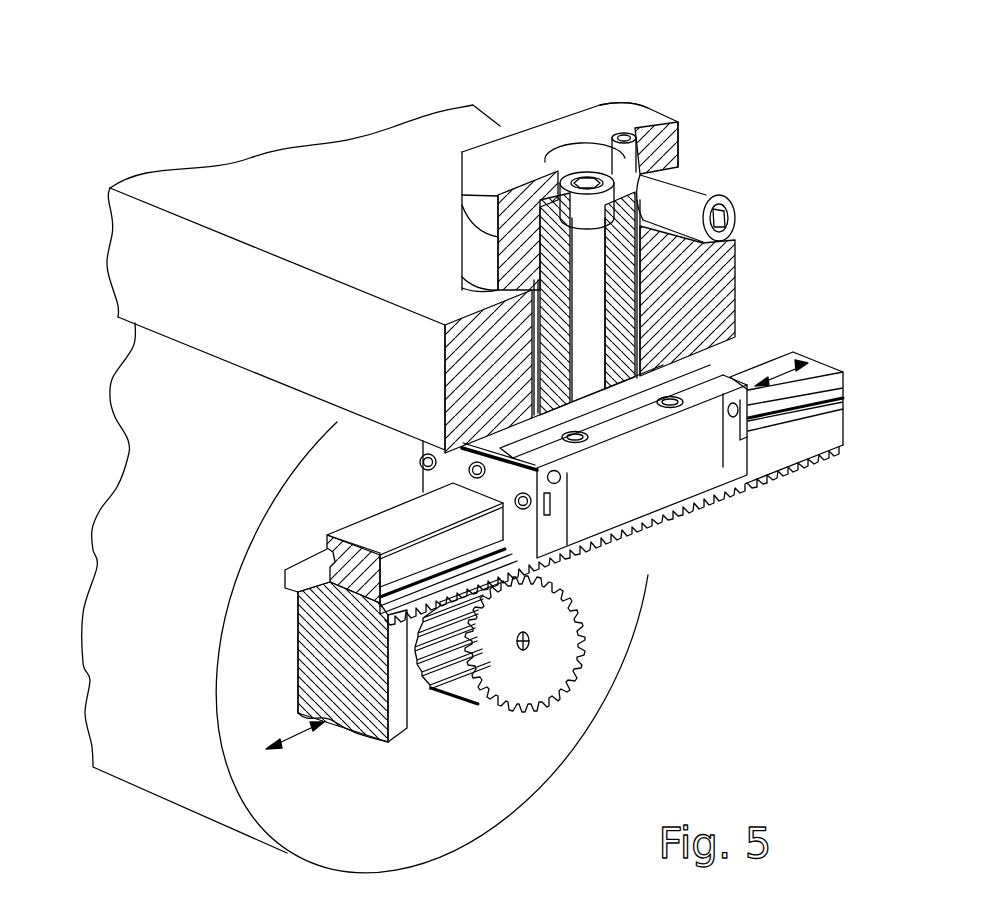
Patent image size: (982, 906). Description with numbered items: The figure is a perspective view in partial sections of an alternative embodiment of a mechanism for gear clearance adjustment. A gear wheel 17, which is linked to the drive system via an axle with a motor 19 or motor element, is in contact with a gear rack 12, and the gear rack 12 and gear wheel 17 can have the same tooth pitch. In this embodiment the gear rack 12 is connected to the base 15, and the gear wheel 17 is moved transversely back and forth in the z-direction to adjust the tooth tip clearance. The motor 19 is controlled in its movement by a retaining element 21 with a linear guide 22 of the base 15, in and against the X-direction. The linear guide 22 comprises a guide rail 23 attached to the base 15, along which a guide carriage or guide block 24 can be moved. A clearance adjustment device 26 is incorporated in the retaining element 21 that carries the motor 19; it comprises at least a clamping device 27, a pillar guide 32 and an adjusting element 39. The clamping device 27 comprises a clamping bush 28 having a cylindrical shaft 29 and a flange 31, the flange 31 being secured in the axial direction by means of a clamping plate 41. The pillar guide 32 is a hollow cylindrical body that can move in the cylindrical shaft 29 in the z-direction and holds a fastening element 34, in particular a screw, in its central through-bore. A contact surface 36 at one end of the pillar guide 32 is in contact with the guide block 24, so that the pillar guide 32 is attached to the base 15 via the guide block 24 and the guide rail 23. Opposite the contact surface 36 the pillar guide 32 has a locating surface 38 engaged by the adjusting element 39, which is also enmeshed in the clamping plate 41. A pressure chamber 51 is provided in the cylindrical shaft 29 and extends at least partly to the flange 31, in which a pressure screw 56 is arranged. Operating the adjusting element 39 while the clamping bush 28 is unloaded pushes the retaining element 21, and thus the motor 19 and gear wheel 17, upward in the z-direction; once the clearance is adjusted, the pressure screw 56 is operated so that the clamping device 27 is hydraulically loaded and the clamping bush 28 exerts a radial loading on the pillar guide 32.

The gear rack 12 is at (799, 473).
The base 15 is at (408, 730).
The gear wheel 17 is at (550, 652).
The motor 19 is at (160, 513).
The retaining element 21 is at (418, 140).
The linear guide 22 is at (755, 348).
The guide rail 23 is at (370, 530).
The guide block 24 is at (596, 473).
The clearance adjustment device 26 is at (578, 208).
The clamping device 27 is at (723, 158).
The clamping bush 28 is at (444, 212).
The cylindrical shaft 29 is at (520, 305).
The flange 31 is at (470, 238).
The pillar guide 32 is at (548, 152).
The fastening element 34 is at (600, 276).
The contact surface 36 is at (559, 417).
The locating surface 38 is at (583, 152).
The adjusting element 39 is at (650, 117).
The clamping plate 41 is at (607, 115).
The pressure chamber 51 is at (520, 262).
The pressure screw 56 is at (706, 174).